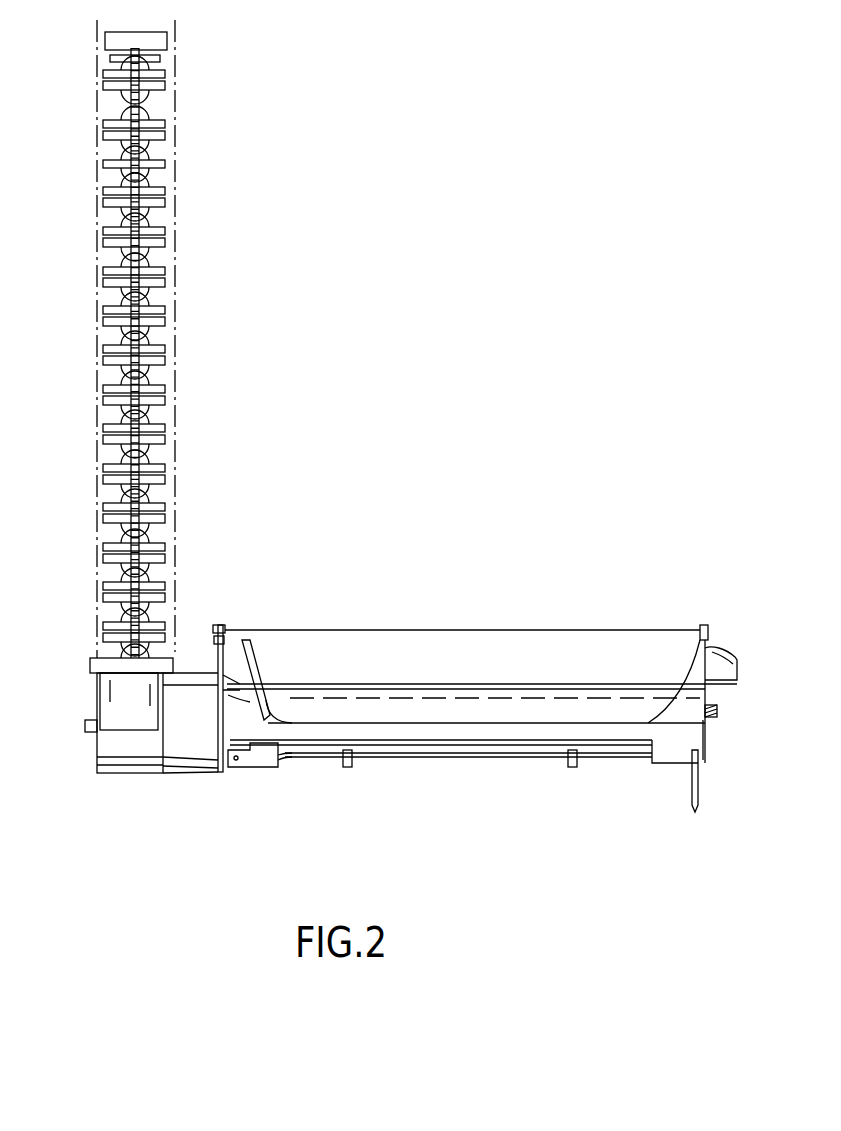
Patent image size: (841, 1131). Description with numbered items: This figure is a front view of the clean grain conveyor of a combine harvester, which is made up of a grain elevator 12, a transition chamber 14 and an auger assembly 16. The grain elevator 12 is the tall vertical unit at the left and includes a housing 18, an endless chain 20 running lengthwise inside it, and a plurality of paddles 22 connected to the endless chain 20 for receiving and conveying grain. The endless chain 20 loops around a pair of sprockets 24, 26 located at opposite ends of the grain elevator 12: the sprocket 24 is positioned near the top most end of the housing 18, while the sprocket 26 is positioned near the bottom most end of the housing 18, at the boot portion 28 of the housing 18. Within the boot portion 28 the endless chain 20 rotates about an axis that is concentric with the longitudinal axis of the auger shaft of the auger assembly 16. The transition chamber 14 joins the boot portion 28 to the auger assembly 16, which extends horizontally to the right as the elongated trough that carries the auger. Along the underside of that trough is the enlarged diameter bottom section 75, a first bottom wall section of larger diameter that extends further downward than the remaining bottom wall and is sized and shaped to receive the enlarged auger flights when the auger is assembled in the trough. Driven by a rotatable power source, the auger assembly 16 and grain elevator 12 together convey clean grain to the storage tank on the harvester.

The grain elevator 12 is at (95, 345).
The transition chamber 14 is at (196, 768).
The auger assembly 16 is at (446, 822).
The housing 18 is at (178, 122).
The endless chain 20 is at (133, 172).
The paddles 22 is at (104, 270).
The sprocket 24 is at (125, 62).
The sprocket 26 is at (85, 726).
The boot portion 28 is at (128, 773).
The enlarged diameter bottom section 75 is at (247, 765).